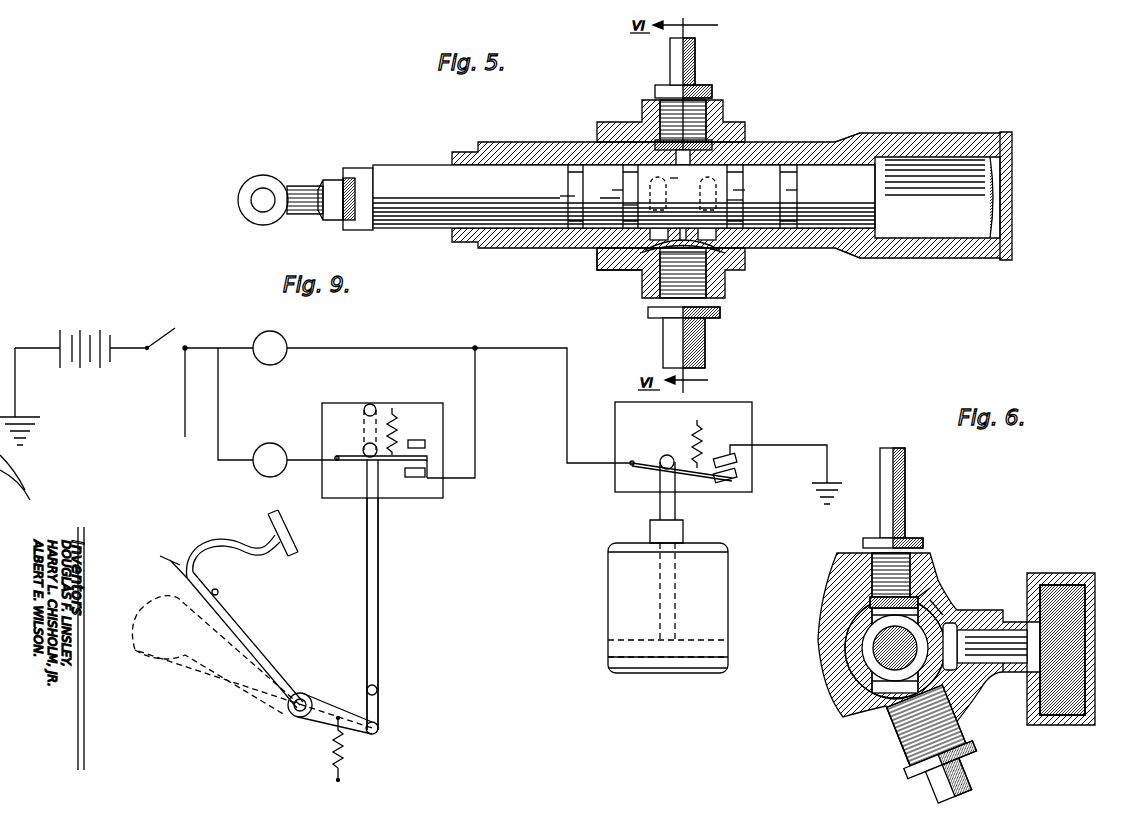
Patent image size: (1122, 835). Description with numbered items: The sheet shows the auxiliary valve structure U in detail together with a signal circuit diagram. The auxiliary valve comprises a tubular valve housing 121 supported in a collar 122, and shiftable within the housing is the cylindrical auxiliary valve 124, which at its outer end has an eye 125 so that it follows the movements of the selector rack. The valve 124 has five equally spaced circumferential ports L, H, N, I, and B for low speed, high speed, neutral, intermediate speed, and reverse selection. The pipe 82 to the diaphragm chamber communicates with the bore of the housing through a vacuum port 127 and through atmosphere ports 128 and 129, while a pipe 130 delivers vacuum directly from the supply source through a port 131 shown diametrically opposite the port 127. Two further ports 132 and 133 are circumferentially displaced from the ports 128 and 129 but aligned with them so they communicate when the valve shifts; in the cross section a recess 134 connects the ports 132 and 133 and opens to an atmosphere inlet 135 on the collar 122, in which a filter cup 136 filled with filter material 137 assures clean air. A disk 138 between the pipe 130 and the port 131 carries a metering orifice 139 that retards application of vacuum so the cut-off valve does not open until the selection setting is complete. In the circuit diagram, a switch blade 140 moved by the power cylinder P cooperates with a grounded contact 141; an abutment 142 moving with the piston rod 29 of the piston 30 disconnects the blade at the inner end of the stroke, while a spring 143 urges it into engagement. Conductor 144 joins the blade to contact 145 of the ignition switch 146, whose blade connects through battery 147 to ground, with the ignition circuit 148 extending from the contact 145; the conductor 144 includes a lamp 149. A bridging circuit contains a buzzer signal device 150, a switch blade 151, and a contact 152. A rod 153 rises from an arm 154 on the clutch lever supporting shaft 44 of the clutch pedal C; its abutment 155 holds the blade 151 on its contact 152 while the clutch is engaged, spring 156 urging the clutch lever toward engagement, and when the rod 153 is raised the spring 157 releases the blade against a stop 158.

In FIG. 5, the auxiliary valve structure U is at (780, 140).
In FIG. 5, the tubular valve housing 121 is at (830, 132).
In FIG. 6, the tubular valve housing 121 is at (880, 640).
In FIG. 5, the collar 122 is at (710, 130).
In FIG. 6, the collar 122 is at (830, 622).
In FIG. 5, the cylindrical auxiliary valve 124 is at (515, 168).
In FIG. 6, the cylindrical auxiliary valve 124 is at (885, 660).
In FIG. 5, the eye 125 is at (275, 185).
In FIG. 5, the vacuum port 127 is at (725, 278).
In FIG. 6, the vacuum port 127 is at (885, 688).
In FIG. 5, the atmosphere port 128 is at (622, 265).
In FIG. 5, the atmosphere port 129 is at (740, 252).
In FIG. 5, the pipe 130 is at (695, 75).
In FIG. 6, the pipe 130 is at (905, 500).
In FIG. 5, the pipe 82 is at (700, 348).
In FIG. 6, the pipe 82 is at (958, 768).
In FIG. 5, the low speed port L is at (560, 196).
In FIG. 5, the high speed port H is at (612, 190).
In FIG. 5, the neutral port N is at (678, 178).
In FIG. 5, the intermediate speed port I is at (735, 192).
In FIG. 5, the reverse port B is at (790, 190).
In FIG. 5, the port 132 is at (623, 202).
In FIG. 6, the port 132 is at (948, 635).
In FIG. 5, the port 133 is at (735, 205).
In FIG. 6, the port 131 is at (922, 622).
In FIG. 6, the recess 134 is at (950, 645).
In FIG. 6, the atmosphere inlet 135 is at (1000, 680).
In FIG. 6, the filter cup 136 is at (1070, 718).
In FIG. 6, the filter material 137 is at (1088, 557).
In FIG. 6, the disk 138 is at (912, 612).
In FIG. 6, the metering orifice 139 is at (870, 602).
In FIG. 9, the switch blade 140 is at (722, 480).
In FIG. 9, the contact 141 is at (740, 462).
In FIG. 9, the abutment 142 is at (667, 455).
In FIG. 9, the spring 143 is at (700, 445).
In FIG. 9, the conductor 144 is at (548, 328).
In FIG. 9, the contact 145 is at (228, 335).
In FIG. 9, the switch 146 is at (158, 325).
In FIG. 9, the battery 147 is at (95, 322).
In FIG. 9, the ignition circuit 148 is at (185, 400).
In FIG. 9, the lamp 149 is at (290, 318).
In FIG. 9, the signal device 150 is at (288, 432).
In FIG. 9, the switch blade 151 is at (397, 460).
In FIG. 9, the contact 152 is at (415, 477).
In FIG. 9, the rod 153 is at (378, 606).
In FIG. 9, the arm 154 is at (365, 728).
In FIG. 9, the abutment 155 is at (365, 448).
In FIG. 9, the spring 156 is at (330, 760).
In FIG. 9, the spring 157 is at (400, 430).
In FIG. 9, the stop 158 is at (425, 440).
In FIG. 9, the clutch pedal C is at (290, 640).
In FIG. 9, the clutch lever supporting shaft 44 is at (295, 718).
In FIG. 9, the rod 29 is at (675, 510).
In FIG. 9, the power cylinder P is at (710, 615).
In FIG. 9, the piston 30 is at (665, 680).